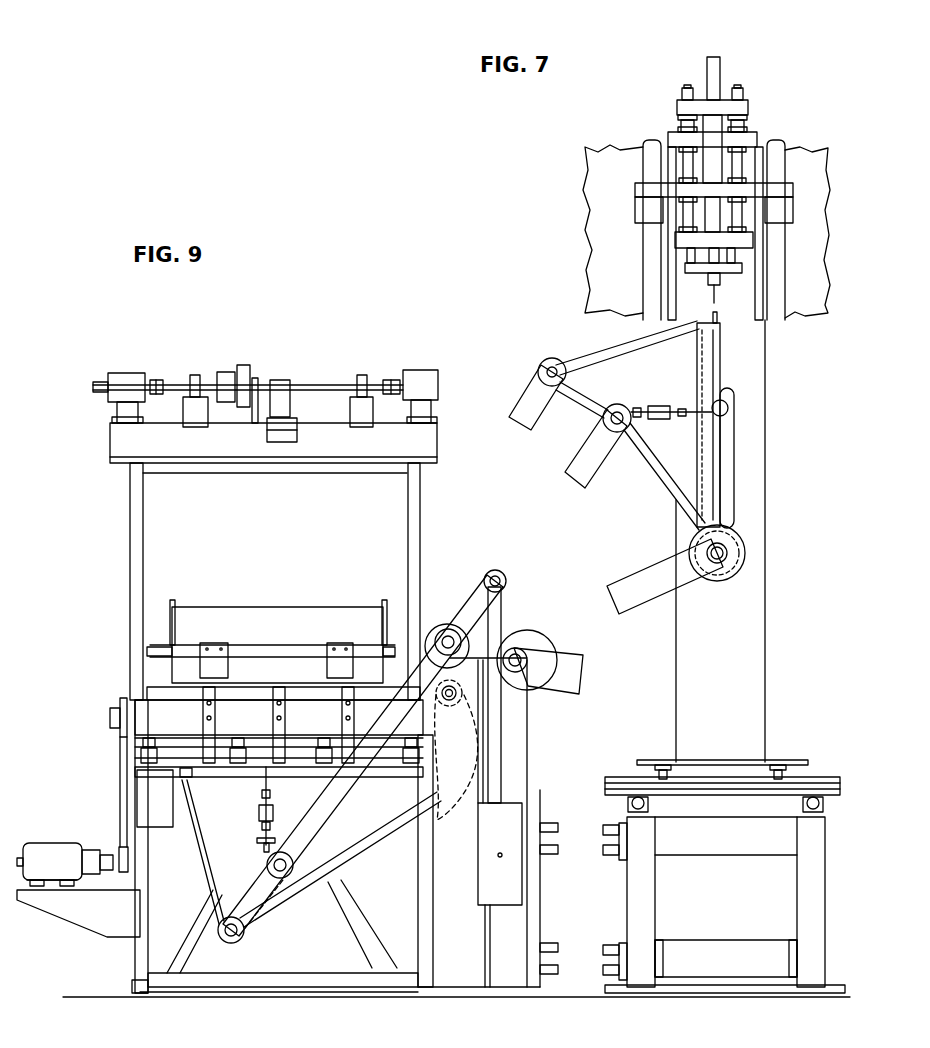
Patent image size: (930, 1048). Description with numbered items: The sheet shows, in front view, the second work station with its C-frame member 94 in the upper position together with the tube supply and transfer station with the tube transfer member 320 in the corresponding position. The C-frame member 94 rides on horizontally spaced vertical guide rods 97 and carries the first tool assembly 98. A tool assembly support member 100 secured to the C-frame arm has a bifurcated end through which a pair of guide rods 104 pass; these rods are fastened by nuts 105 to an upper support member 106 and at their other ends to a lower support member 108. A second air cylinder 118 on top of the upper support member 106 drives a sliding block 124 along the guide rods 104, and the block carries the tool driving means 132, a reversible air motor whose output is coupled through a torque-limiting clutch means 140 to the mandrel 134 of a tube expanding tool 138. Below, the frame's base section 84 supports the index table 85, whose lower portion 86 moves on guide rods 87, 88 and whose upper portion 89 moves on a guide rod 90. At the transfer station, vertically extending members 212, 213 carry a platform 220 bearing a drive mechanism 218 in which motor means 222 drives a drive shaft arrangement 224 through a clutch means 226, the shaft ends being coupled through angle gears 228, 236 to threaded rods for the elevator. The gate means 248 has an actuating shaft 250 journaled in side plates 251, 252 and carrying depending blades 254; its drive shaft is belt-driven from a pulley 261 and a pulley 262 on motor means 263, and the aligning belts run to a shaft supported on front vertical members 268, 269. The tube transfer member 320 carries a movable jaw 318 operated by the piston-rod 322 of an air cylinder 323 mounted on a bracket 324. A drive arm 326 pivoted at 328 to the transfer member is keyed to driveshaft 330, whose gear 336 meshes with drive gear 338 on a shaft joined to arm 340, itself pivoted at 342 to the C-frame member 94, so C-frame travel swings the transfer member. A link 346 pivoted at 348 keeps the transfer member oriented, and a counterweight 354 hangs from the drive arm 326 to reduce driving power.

In FIG. 7, the base section 84 is at (638, 882).
In FIG. 7, the index table 85 is at (598, 790).
In FIG. 7, the lower portion 86 is at (738, 795).
In FIG. 7, the guide rod 87 is at (803, 812).
In FIG. 7, the guide rod 88 is at (646, 812).
In FIG. 7, the upper portion 89 is at (790, 762).
In FIG. 7, the guide rod 90 is at (605, 783).
In FIG. 7, the C-frame member 94 is at (742, 360).
In FIG. 7, the vertical guide rods 97 is at (652, 165).
In FIG. 7, the first tool assembly 98 is at (636, 60).
In FIG. 7, the tool assembly support member 100 is at (758, 140).
In FIG. 7, the guide rods 104 is at (736, 170).
In FIG. 7, the nuts 105 is at (688, 86).
In FIG. 7, the upper support member 106 is at (748, 108).
In FIG. 7, the lower support member 108 is at (750, 240).
In FIG. 7, the second air cylinder 118 is at (722, 68).
In FIG. 7, the sliding block 124 is at (737, 193).
In FIG. 7, the tool driving means 132 is at (713, 142).
In FIG. 7, the mandrel 134 is at (712, 262).
In FIG. 7, the tube expanding tool 138 is at (718, 300).
In FIG. 7, the torque-limiting clutch means 140 is at (713, 222).
In FIG. 9, the vertically extending member 212 is at (138, 526).
In FIG. 9, the vertically extending member 213 is at (414, 526).
In FIG. 9, the drive mechanism 218 is at (295, 312).
In FIG. 9, the platform 220 is at (432, 455).
In FIG. 9, the motor means 222 is at (304, 410).
In FIG. 9, the drive shaft arrangement 224 is at (248, 369).
In FIG. 9, the clutch means 226 is at (259, 378).
In FIG. 9, the angle gear 228 is at (125, 381).
In FIG. 9, the angle gear 236 is at (422, 380).
In FIG. 9, the gate means 248 is at (277, 630).
In FIG. 9, the actuating shaft 250 is at (236, 650).
In FIG. 9, the side plate 251 is at (176, 640).
In FIG. 9, the side plate 252 is at (384, 611).
In FIG. 9, the depending blades 254 is at (338, 663).
In FIG. 9, the pulley 261 is at (118, 712).
In FIG. 9, the pulley 262 is at (120, 855).
In FIG. 9, the motor means 263 is at (50, 840).
In FIG. 9, the vertical member 268 is at (144, 867).
In FIG. 9, the vertical member 269 is at (426, 918).
In FIG. 9, the movable jaw 318 is at (182, 776).
In FIG. 9, the tube transfer member 320 is at (215, 885).
In FIG. 9, the piston-rod 322 is at (262, 787).
In FIG. 7, the air cylinder 323 is at (660, 419).
In FIG. 9, the air cylinder 323 is at (258, 815).
In FIG. 9, the bracket 324 is at (257, 845).
In FIG. 7, the drive arm 326 is at (573, 463).
In FIG. 9, the drive arm 326 is at (306, 836).
In FIG. 7, the pivot 328 is at (617, 408).
In FIG. 9, the pivot 328 is at (266, 865).
In FIG. 9, the driveshaft 330 is at (450, 630).
In FIG. 9, the gear 336 is at (440, 625).
In FIG. 9, the drive gear 338 is at (521, 626).
In FIG. 7, the arm 340 is at (641, 575).
In FIG. 9, the arm 340 is at (560, 652).
In FIG. 7, the pivot 342 is at (730, 553).
In FIG. 7, the link 346 is at (528, 398).
In FIG. 9, the link 346 is at (350, 855).
In FIG. 9, the pivot 348 is at (238, 937).
In FIG. 9, the counterweight 354 is at (500, 855).